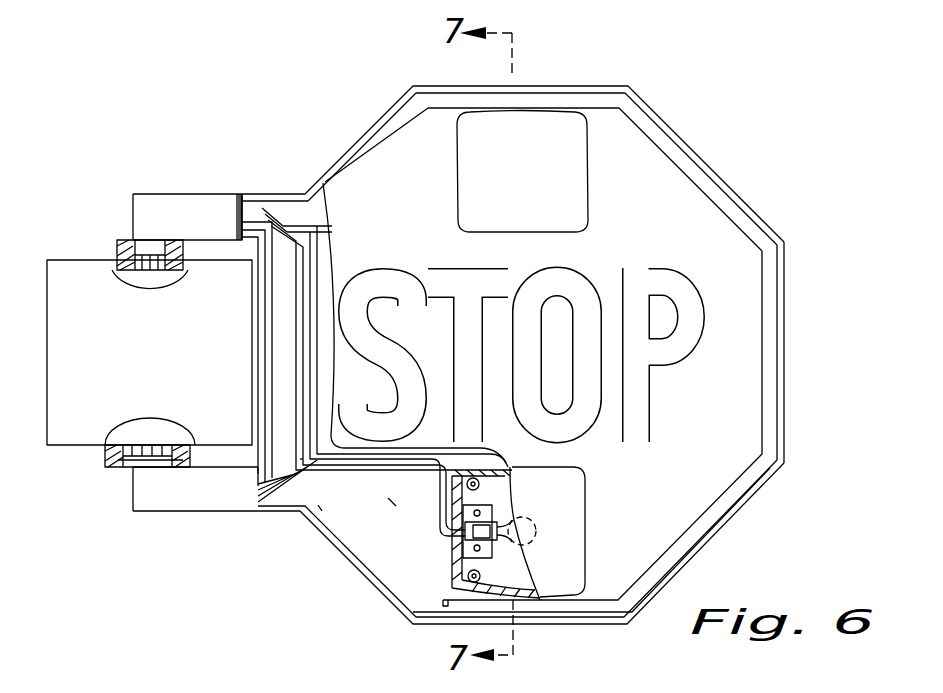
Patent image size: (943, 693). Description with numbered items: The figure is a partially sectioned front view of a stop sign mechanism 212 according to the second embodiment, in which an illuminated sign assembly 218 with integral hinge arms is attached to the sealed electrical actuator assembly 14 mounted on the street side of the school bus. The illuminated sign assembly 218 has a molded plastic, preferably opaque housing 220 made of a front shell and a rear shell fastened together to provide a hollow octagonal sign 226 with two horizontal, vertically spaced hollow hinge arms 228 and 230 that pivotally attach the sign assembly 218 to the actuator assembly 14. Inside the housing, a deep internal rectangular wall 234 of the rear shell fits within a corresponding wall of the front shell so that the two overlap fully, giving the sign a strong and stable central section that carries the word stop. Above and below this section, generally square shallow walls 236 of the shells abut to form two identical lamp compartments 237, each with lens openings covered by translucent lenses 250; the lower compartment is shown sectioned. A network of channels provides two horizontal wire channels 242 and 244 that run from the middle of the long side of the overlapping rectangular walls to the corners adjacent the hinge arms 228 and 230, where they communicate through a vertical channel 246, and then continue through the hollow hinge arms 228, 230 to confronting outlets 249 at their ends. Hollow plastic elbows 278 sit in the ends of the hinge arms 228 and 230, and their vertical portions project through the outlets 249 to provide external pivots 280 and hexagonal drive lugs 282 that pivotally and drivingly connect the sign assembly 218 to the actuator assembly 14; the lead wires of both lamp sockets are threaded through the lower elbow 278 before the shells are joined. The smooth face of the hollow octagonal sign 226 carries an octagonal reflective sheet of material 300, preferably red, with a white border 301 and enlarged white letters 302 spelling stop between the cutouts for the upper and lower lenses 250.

The sealed electrical actuator assembly 14 is at (90, 447).
The stop sign mechanism 212 is at (738, 166).
The illuminated sign assembly 218 is at (785, 462).
The housing 220 is at (772, 226).
The hollow octagonal sign 226 is at (400, 98).
The upper hinge arm 228 is at (184, 202).
The lower hinge arm 230 is at (218, 500).
The internal rectangular wall 234 is at (418, 460).
The shallow wall 236 is at (463, 578).
The lamp compartment 237 is at (527, 133).
The horizontal wire channel 242 is at (260, 212).
The horizontal wire channel 244 is at (355, 473).
The vertical channel 246 is at (415, 324).
The outlet 249 is at (148, 240).
The translucent lens 250 is at (565, 190).
The plastic elbow 278 is at (120, 240).
The external pivot 280 is at (118, 252).
The hexagonal drive lug 282 is at (148, 270).
The reflective sheet of material 300 is at (752, 333).
The white border 301 is at (654, 130).
The white letters 302 is at (440, 272).